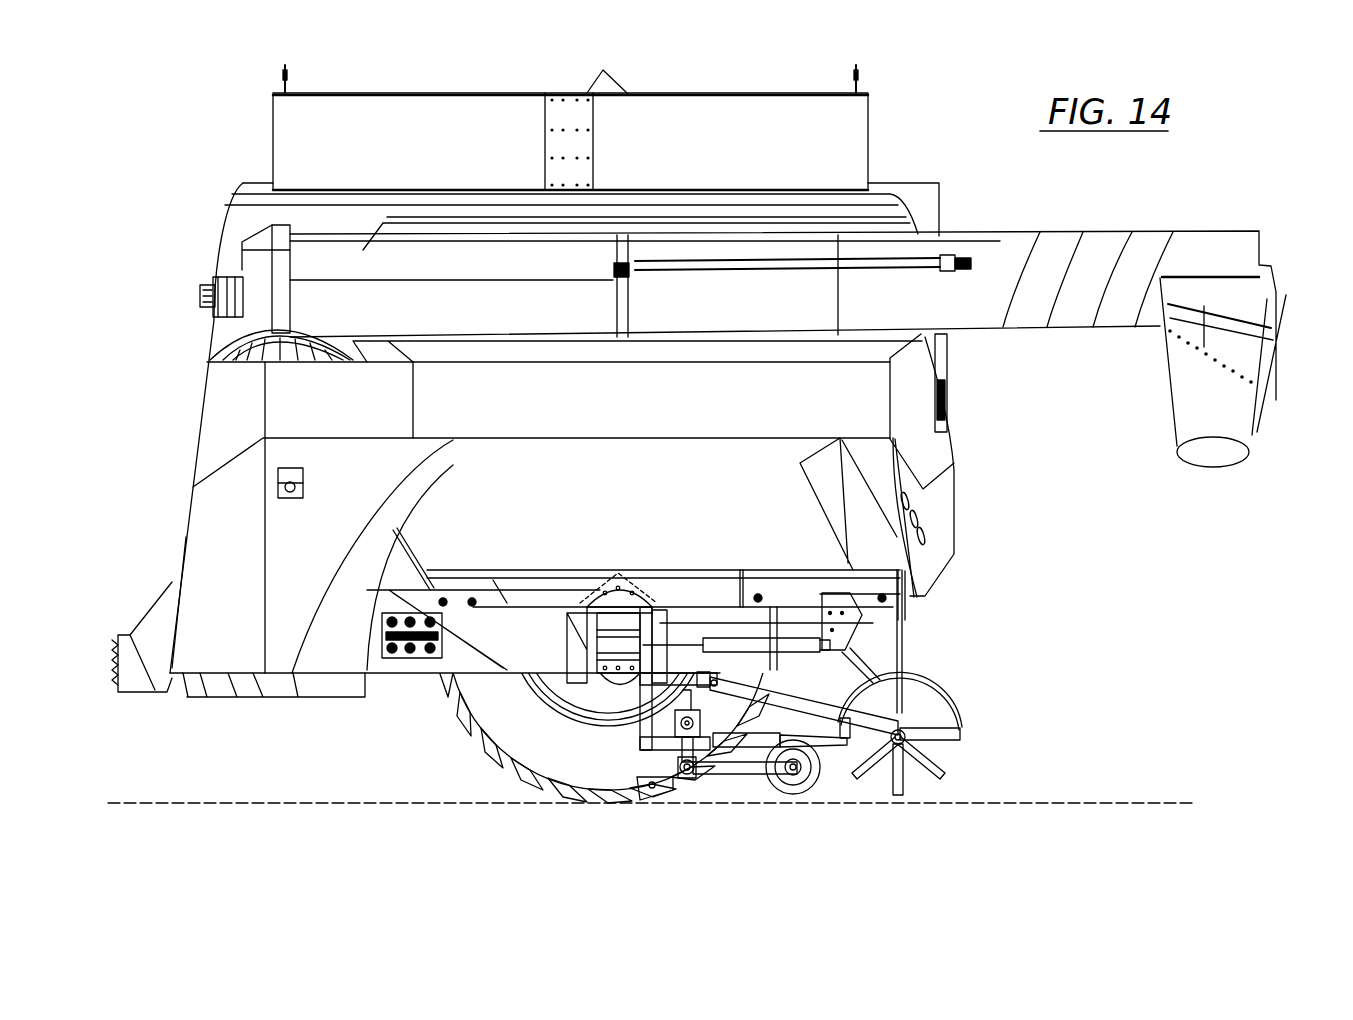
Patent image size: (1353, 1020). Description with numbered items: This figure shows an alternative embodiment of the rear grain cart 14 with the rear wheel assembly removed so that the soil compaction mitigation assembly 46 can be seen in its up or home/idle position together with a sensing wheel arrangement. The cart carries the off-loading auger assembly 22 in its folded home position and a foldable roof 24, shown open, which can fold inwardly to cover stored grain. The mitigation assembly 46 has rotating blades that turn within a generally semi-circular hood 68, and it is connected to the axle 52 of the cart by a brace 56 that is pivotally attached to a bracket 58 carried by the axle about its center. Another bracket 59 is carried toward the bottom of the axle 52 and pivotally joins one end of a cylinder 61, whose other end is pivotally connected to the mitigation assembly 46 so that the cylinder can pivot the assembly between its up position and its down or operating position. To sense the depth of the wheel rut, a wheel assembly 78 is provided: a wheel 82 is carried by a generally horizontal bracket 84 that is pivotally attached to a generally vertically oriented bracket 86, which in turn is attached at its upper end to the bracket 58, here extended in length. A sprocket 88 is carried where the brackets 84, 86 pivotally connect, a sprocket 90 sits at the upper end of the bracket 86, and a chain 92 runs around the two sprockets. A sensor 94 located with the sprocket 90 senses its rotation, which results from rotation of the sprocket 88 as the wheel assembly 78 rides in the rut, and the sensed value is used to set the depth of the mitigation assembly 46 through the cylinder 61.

The rear grain cart 14 is at (224, 140).
The off-loading auger assembly 22 is at (1100, 243).
The foldable roof 24 is at (843, 143).
The soil compaction mitigation assembly 46 is at (957, 680).
The axle 52 is at (603, 683).
The brace 56 is at (787, 703).
The bracket 58 is at (653, 682).
The bracket 59 is at (673, 742).
The cylinder 61 is at (732, 747).
The semi-circular hood 68 is at (943, 703).
The wheel assembly 78 is at (797, 847).
The wheel 82 is at (798, 793).
The horizontal bracket 84 is at (713, 770).
The vertical bracket 86 is at (678, 750).
The sprocket 88 is at (690, 778).
The sprocket 90 is at (688, 710).
The chain 92 is at (652, 783).
The sensor 94 is at (700, 728).